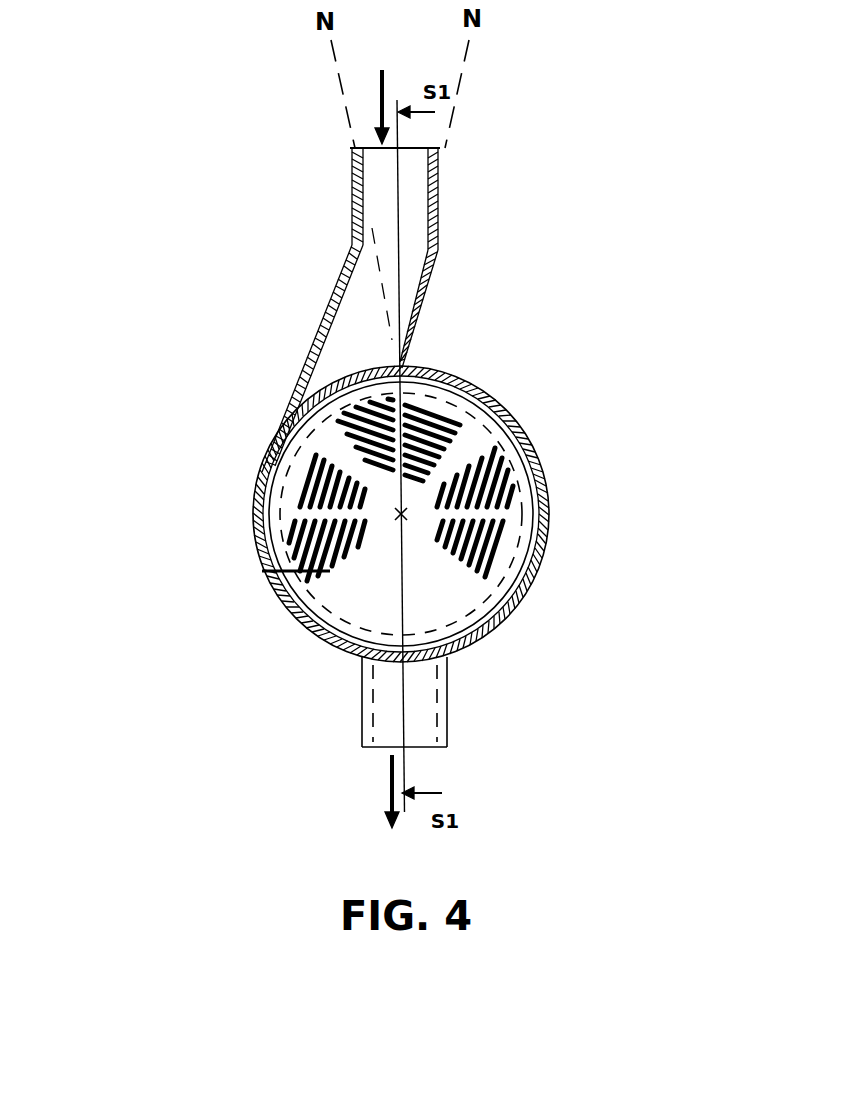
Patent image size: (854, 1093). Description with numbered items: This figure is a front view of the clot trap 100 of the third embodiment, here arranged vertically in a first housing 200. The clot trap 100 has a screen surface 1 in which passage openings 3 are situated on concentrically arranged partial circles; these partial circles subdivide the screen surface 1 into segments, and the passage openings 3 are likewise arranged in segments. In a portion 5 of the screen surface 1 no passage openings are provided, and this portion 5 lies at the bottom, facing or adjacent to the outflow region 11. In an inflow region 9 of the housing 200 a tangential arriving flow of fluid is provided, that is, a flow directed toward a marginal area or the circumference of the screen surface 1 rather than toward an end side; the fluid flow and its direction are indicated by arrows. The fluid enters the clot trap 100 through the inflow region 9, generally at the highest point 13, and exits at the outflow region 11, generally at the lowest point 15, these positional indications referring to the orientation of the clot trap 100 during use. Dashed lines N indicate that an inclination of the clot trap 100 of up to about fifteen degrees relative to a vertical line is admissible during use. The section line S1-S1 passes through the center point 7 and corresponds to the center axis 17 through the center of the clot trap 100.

The screen surface 1 is at (310, 512).
The passage openings 3 is at (432, 458).
The portion without passage openings 5 is at (423, 597).
The center point 7 is at (403, 513).
The inflow region 9 is at (365, 310).
The outflow region 11 is at (425, 695).
The highest point 13 is at (413, 358).
The lowest point 15 is at (398, 668).
The center axis 17 is at (400, 207).
The clot trap 100 is at (235, 442).
The first housing 200 is at (287, 385).